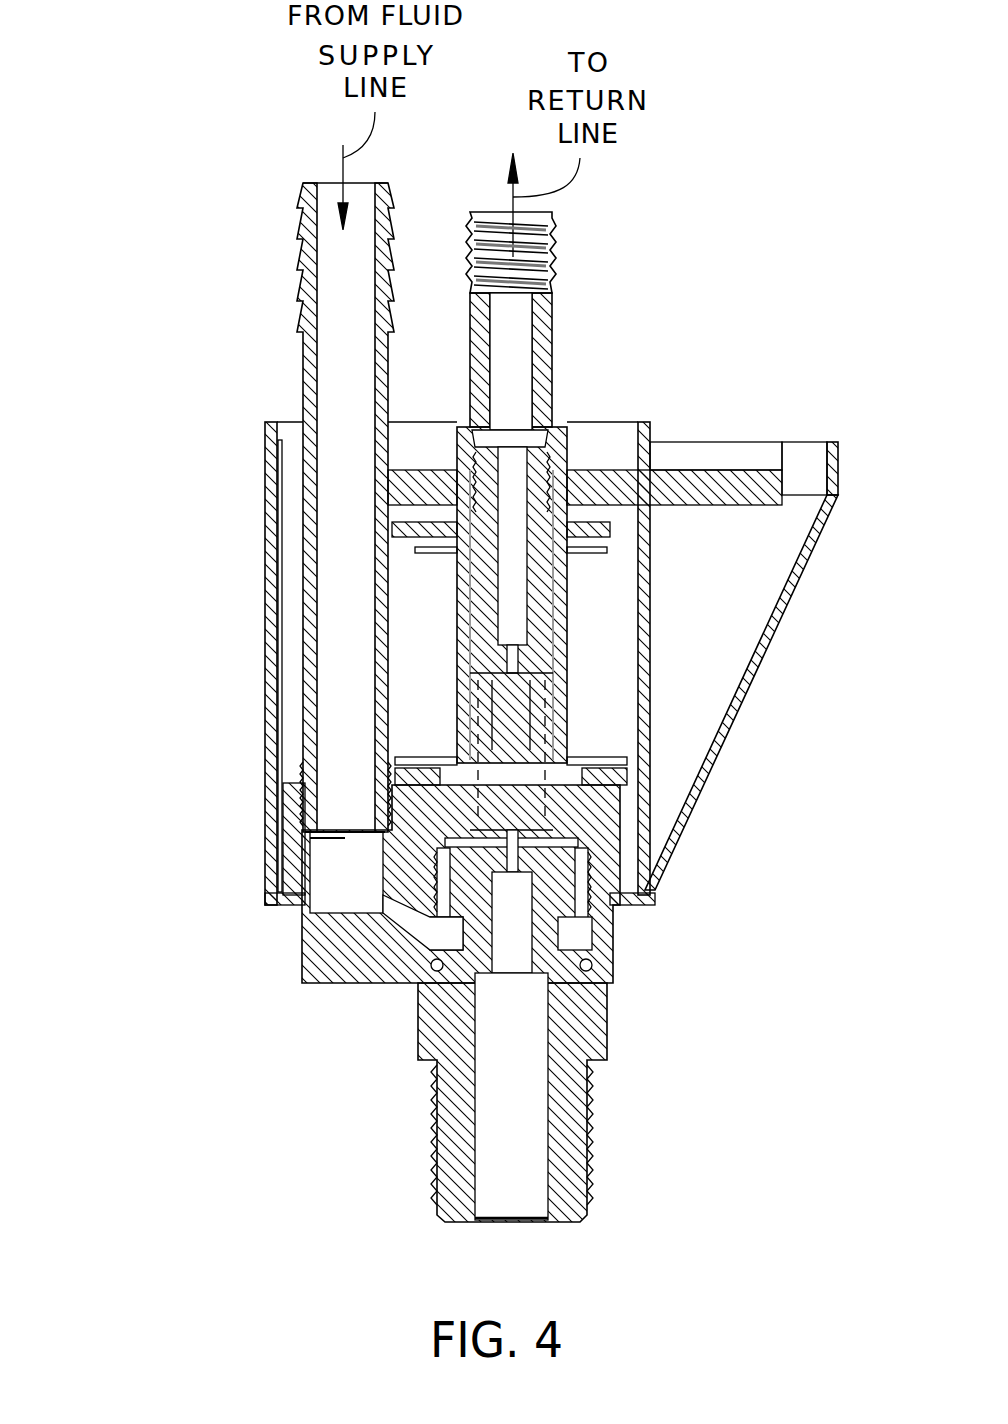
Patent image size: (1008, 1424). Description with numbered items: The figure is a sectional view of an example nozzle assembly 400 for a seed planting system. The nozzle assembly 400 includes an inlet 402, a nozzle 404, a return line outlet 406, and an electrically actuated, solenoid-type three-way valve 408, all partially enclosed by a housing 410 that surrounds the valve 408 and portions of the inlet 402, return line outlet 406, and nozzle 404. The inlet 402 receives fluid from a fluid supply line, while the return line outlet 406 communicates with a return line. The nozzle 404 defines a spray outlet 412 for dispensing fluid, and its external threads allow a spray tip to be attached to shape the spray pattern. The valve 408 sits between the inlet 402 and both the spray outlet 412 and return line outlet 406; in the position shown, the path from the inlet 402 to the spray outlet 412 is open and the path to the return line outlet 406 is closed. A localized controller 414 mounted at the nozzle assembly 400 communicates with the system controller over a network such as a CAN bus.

The nozzle assembly 400 is at (180, 158).
The inlet 402 is at (302, 337).
The nozzle 404 is at (563, 1163).
The return line outlet 406 is at (553, 322).
The three-way valve 408 is at (630, 756).
The housing 410 is at (262, 455).
The spray outlet 412 is at (492, 1190).
The localized controller 414 is at (603, 483).